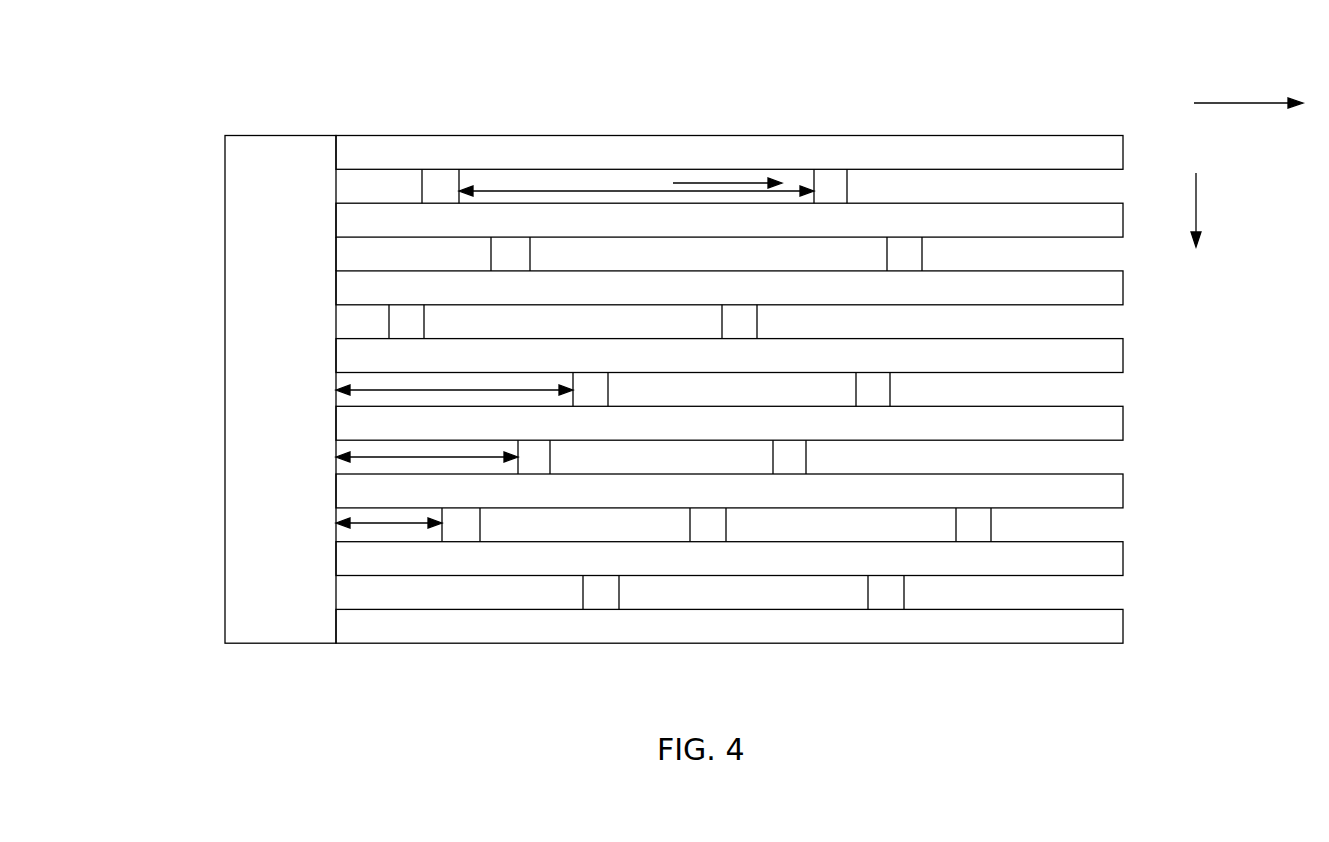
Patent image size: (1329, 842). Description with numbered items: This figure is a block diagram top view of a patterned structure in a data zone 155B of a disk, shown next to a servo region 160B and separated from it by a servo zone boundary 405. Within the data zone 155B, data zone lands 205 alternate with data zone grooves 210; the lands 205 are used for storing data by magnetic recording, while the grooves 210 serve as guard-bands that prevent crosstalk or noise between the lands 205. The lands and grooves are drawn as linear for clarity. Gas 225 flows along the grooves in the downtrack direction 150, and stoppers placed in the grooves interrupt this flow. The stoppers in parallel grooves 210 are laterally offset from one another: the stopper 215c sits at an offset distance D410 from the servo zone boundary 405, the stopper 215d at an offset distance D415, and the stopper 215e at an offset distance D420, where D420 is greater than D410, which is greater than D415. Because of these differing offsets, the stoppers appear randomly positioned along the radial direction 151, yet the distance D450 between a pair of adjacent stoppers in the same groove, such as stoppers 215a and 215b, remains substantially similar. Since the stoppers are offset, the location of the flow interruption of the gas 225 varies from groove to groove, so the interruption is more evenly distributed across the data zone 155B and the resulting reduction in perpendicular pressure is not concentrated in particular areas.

The servo zone boundary 405 is at (325, 253).
The stopper 215a is at (430, 187).
The stopper 215b is at (840, 187).
The stopper 215c is at (598, 390).
The stopper 215d is at (542, 457).
The stopper 215e is at (466, 523).
The distance between adjacent stoppers D450 is at (553, 190).
The gas 225 is at (717, 182).
The data zone land 205 is at (1123, 352).
The data zone groove 210 is at (762, 437).
The offset distance D410 is at (373, 406).
The offset distance D415 is at (373, 474).
The offset distance D420 is at (373, 542).
The servo region 160B is at (336, 643).
The data zone 155B is at (762, 415).
The downtrack direction 150 is at (1265, 103).
The radial direction 151 is at (1196, 198).